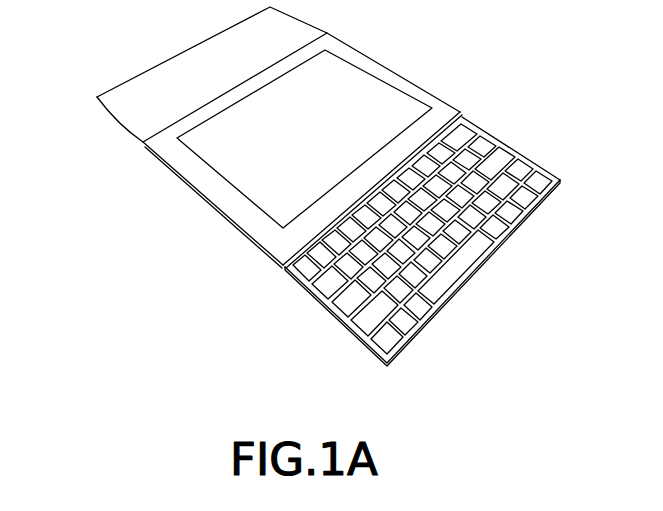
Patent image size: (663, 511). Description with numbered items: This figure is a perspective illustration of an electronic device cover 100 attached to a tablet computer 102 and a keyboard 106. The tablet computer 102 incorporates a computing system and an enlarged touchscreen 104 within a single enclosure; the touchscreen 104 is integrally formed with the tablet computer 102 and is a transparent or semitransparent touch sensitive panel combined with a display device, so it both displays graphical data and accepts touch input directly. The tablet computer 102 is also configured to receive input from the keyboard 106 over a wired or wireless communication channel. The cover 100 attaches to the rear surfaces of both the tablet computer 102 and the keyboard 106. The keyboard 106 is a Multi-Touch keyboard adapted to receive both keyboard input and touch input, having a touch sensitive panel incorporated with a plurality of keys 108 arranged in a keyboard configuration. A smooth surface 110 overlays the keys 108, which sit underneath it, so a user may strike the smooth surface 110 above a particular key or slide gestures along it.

The electronic device cover 100 is at (113, 102).
The tablet computer 102 is at (445, 107).
The touchscreen 104 is at (332, 67).
The keyboard 106 is at (332, 307).
The keys 108 is at (482, 132).
The smooth surface 110 is at (440, 253).